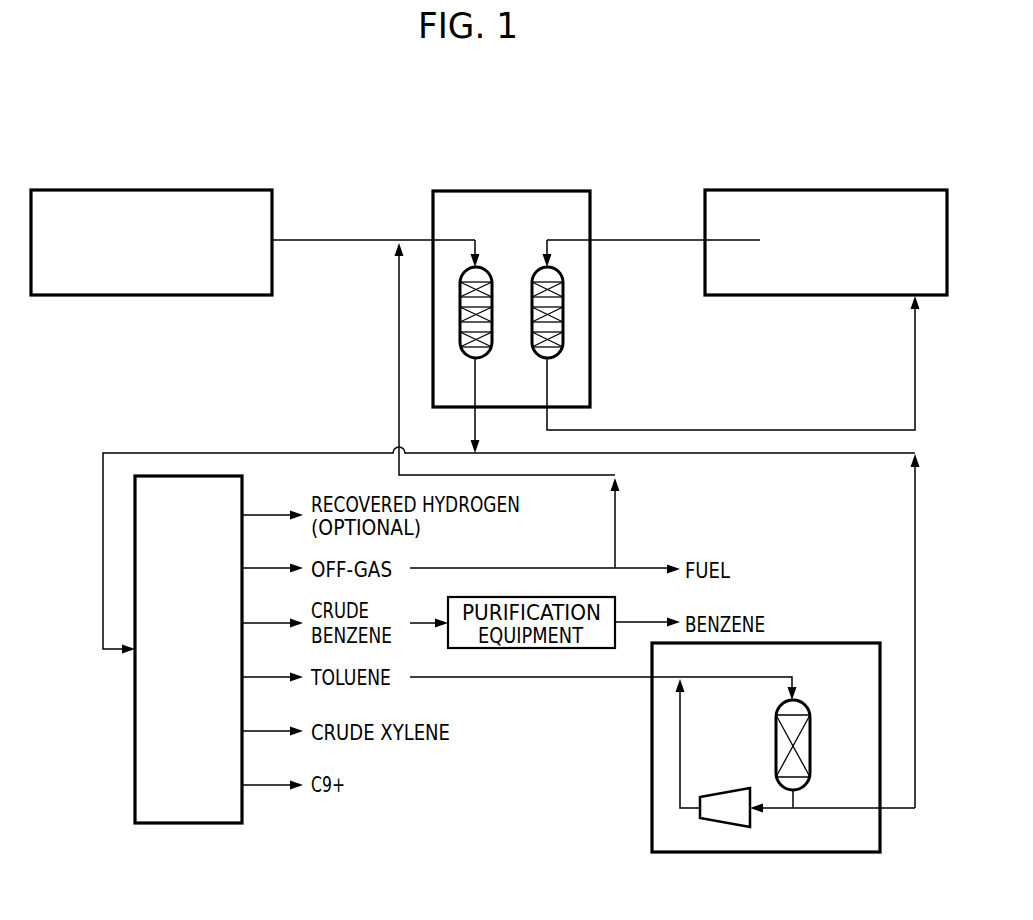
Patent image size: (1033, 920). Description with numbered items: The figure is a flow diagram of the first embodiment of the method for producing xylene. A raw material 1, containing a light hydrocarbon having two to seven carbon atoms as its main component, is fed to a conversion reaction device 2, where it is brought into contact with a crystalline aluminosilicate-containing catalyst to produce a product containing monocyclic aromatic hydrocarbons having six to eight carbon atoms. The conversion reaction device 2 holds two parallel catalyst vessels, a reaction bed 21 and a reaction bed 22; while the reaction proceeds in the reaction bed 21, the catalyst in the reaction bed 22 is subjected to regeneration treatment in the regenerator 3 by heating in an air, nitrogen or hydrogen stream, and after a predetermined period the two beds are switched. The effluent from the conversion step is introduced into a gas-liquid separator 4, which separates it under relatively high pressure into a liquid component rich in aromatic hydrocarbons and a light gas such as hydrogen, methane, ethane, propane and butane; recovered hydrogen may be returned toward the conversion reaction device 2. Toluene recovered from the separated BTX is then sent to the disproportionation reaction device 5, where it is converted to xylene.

The raw material 1 is at (132, 190).
The conversion reaction device 2 is at (560, 190).
The regenerator 3 is at (887, 190).
The gas-liquid separator 4 is at (244, 482).
The disproportionation reaction device 5 is at (836, 643).
The reaction bed 21 is at (493, 293).
The reaction bed 22 is at (531, 337).